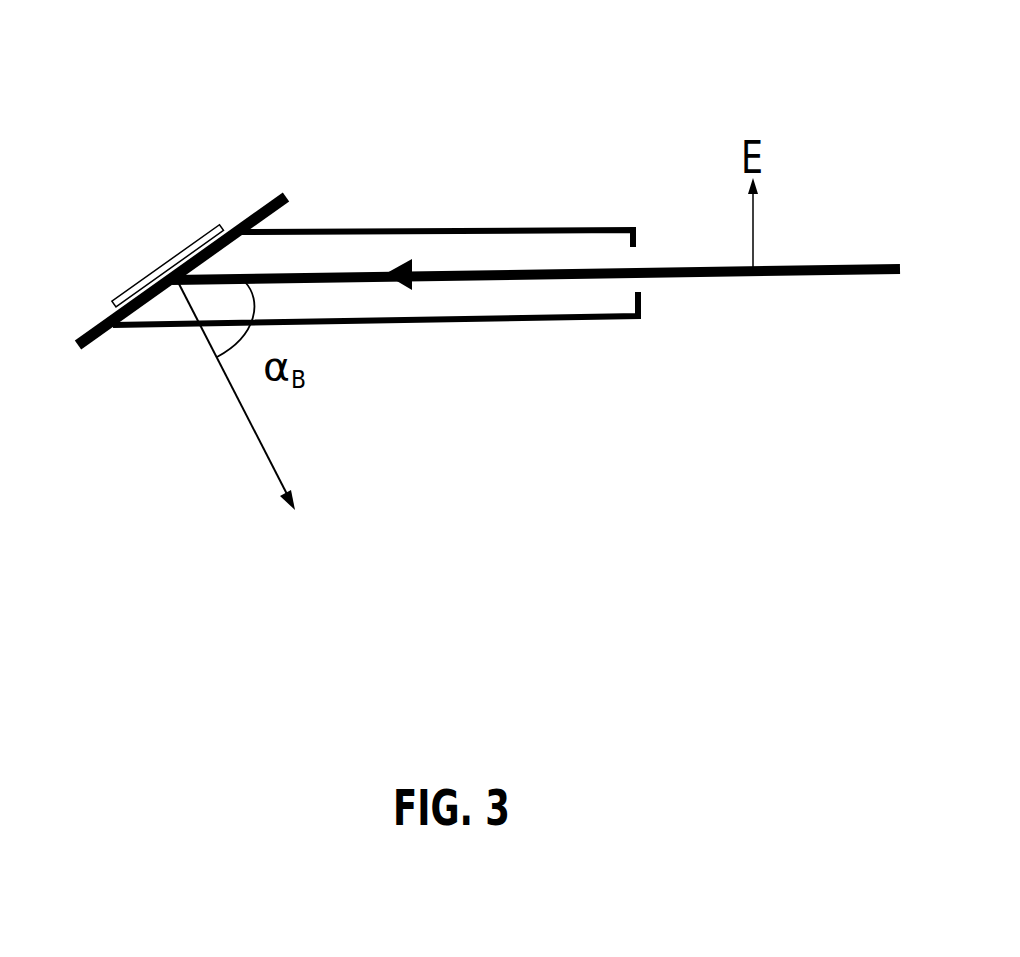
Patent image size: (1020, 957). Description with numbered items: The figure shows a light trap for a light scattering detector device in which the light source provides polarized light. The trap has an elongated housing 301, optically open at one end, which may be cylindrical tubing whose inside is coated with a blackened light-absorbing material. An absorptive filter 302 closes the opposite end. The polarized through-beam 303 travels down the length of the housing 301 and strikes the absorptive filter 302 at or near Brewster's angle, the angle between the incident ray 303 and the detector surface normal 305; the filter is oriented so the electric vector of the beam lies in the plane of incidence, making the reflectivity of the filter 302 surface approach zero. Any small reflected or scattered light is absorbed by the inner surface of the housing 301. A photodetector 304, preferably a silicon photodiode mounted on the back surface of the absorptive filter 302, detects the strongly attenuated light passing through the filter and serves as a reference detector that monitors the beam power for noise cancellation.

The housing 301 is at (575, 320).
The absorptive filter 302 is at (255, 207).
The polarized through-beam 303 is at (805, 273).
The photodetector 304 is at (138, 282).
The detector surface normal 305 is at (243, 412).